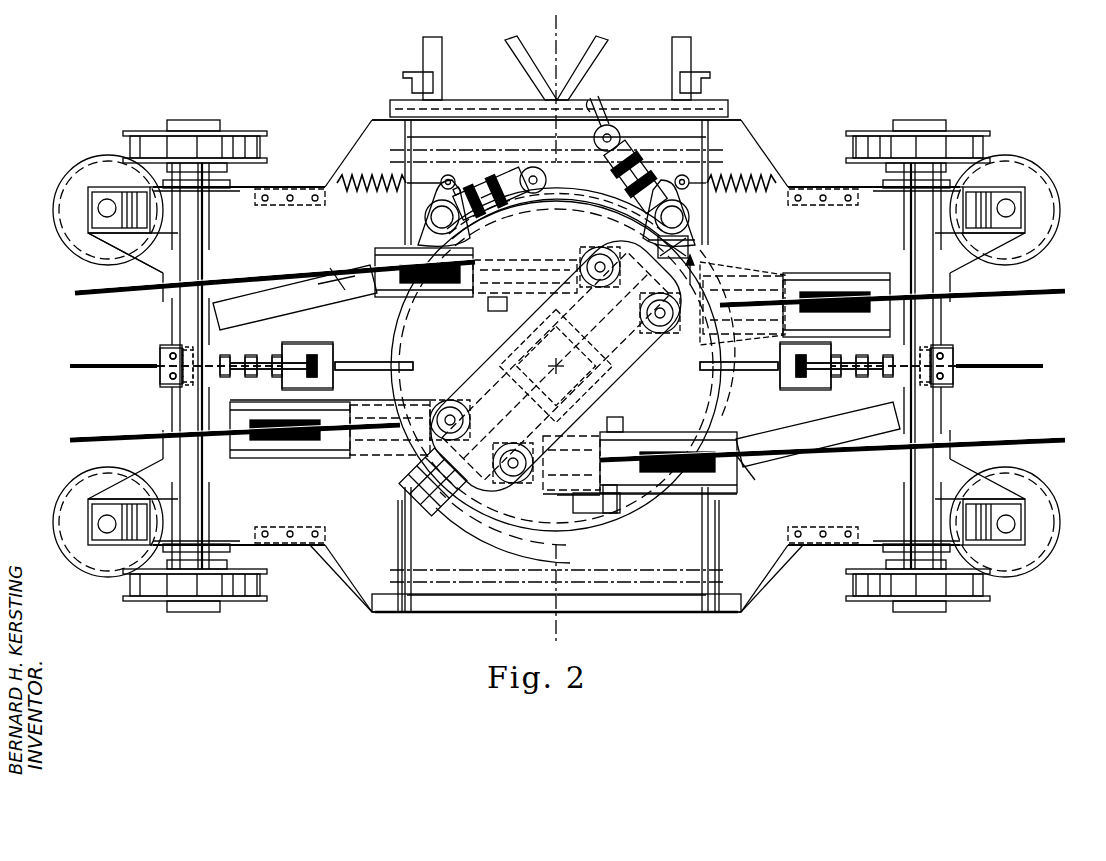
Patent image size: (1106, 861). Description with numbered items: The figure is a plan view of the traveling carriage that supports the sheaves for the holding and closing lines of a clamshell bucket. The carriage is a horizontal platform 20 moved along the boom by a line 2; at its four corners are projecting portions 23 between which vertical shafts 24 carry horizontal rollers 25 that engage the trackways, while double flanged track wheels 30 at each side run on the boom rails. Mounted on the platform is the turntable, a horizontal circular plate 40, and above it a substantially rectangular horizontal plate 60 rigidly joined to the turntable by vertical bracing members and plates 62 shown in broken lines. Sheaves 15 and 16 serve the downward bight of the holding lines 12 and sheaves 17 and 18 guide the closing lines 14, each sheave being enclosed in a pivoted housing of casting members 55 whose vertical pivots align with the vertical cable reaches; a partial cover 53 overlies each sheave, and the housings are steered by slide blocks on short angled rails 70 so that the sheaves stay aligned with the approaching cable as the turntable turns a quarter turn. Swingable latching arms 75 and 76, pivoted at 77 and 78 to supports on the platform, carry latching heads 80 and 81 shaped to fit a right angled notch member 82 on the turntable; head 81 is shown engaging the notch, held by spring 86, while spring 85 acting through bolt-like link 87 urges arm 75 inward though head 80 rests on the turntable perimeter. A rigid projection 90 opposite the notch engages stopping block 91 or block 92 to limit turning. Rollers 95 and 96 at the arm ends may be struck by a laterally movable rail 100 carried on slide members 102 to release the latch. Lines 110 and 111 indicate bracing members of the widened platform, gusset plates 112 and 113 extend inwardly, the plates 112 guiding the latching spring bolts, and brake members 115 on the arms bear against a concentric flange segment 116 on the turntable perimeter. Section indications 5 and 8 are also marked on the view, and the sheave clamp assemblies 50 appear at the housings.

The carriage moving line 2 is at (112, 365).
The section line 5 is at (540, 22).
The section line 8 is at (506, 261).
The holding lines 12 is at (85, 300).
The closing lines 14 is at (115, 432).
The sheave 15 is at (675, 490).
The sheave 16 is at (448, 300).
The sheave 17 is at (303, 452).
The sheave 18 is at (822, 285).
The horizontal platform 20 is at (765, 575).
The projecting portions 23 is at (148, 268).
The vertical shafts 24 is at (107, 525).
The horizontal rollers 25 is at (88, 160).
The double flanged track wheels 30 is at (265, 590).
The horizontal circular plate 40 is at (678, 398).
The clamp base 50 is at (255, 460).
The partial cover 53 is at (575, 495).
The casting member 55 is at (470, 380).
The horizontal plate 60 is at (490, 365).
The vertical structural bracing members and plates 62 is at (604, 366).
The short rail 70 is at (298, 308).
The swingable arm 75 is at (475, 185).
The swingable arm 76 is at (640, 162).
The pivot 77 is at (425, 215).
The pivot 78 is at (690, 215).
The latching head 80 is at (420, 240).
The latching head 81 is at (700, 236).
The right angled notch member 82 is at (690, 255).
The spring 85 is at (385, 178).
The spring 86 is at (740, 178).
The bolt-like link 87 is at (338, 180).
The rigid projection 90 is at (440, 510).
The stopping block 91 is at (410, 480).
The block 92 is at (728, 480).
The roller 95 is at (546, 182).
The roller 96 is at (612, 122).
The laterally movable rail 100 is at (700, 100).
The slide members 102 is at (691, 48).
The bracing member 110 is at (405, 135).
The bracing member 111 is at (660, 600).
The gusset plate 112 is at (410, 130).
The gusset plate 113 is at (398, 575).
The brake members 115 is at (636, 204).
The concentric flange segment 116 is at (718, 395).